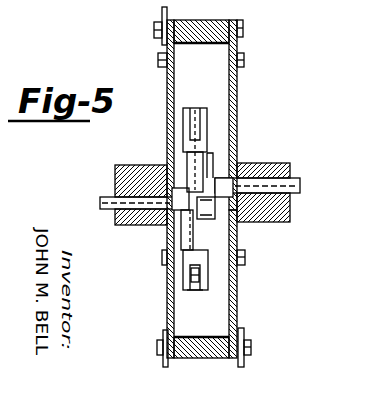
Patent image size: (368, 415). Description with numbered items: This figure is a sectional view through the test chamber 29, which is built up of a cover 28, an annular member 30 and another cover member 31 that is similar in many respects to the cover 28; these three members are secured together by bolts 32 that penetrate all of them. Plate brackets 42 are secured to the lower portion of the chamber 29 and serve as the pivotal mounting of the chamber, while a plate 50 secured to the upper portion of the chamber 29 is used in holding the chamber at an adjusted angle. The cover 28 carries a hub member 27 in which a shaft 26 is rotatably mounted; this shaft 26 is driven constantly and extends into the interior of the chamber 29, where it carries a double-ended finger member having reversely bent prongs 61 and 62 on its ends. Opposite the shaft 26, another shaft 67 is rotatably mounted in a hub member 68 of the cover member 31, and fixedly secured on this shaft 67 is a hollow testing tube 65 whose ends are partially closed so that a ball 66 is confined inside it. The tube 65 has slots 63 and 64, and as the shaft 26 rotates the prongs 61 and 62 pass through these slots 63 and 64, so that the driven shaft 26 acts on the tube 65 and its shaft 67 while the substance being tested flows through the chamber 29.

The shaft 26 is at (303, 182).
The hub member 27 is at (268, 163).
The cover 28 is at (240, 289).
The test chamber 29 is at (239, 48).
The annular member 30 is at (225, 19).
The cover member 31 is at (167, 285).
The bolts 32 is at (244, 61).
The plate brackets 42 is at (163, 358).
The plate 50 is at (162, 12).
The prong 61 is at (200, 241).
The prong 62 is at (203, 156).
The slot 63 is at (196, 108).
The slot 64 is at (208, 272).
The hollow testing tube 65 is at (208, 255).
The ball 66 is at (197, 292).
The shaft 67 is at (106, 197).
The hub member 68 is at (140, 165).